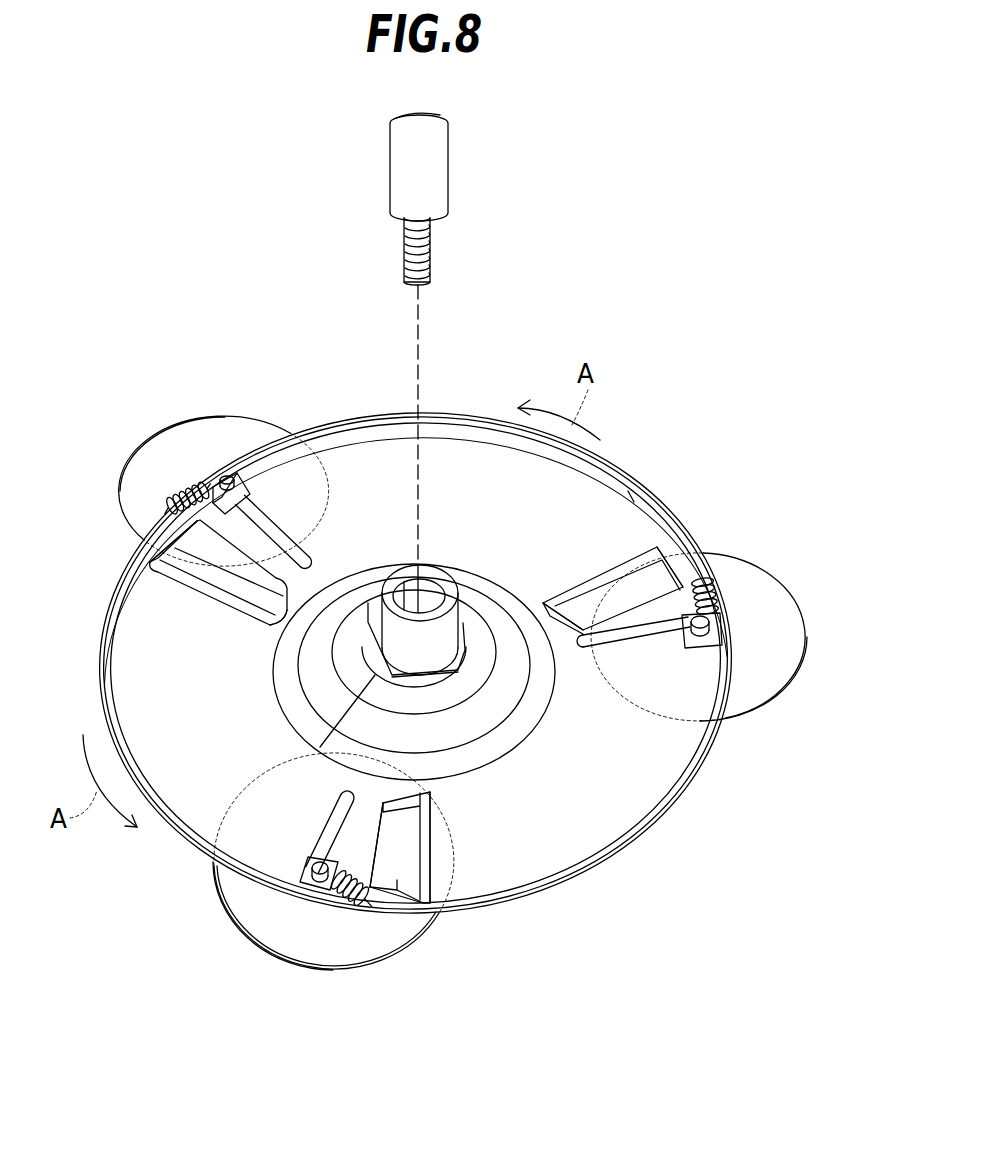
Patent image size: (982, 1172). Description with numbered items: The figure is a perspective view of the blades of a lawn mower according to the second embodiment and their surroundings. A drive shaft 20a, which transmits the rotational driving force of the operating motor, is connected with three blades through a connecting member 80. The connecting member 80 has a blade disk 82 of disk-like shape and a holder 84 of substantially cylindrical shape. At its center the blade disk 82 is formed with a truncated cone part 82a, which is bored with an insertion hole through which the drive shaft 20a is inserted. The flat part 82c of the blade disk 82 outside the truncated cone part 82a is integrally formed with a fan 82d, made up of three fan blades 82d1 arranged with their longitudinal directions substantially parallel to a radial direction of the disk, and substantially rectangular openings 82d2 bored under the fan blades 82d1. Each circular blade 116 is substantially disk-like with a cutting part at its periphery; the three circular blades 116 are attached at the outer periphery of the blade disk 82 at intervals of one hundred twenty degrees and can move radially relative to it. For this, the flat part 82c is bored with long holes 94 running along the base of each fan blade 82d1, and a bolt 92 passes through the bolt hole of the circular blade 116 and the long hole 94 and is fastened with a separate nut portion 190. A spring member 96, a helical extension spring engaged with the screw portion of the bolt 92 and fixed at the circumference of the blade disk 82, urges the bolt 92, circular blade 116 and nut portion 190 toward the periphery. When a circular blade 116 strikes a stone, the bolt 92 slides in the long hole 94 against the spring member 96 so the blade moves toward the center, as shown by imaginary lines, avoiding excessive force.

The drive shaft 20a is at (448, 168).
The connecting member 80 is at (415, 606).
The blade disk 82 is at (632, 494).
The truncated cone part 82a is at (497, 708).
The flat part 82c is at (626, 794).
The fan 82d is at (175, 590).
The fan blade 82d1 is at (305, 558).
The opening 82d2 is at (245, 620).
The holder 84 is at (440, 587).
The bolt 92 is at (228, 476).
The long hole 94 is at (265, 522).
The spring member 96 is at (165, 497).
The circular blade 116 is at (173, 432).
The nut portion 190 is at (283, 440).